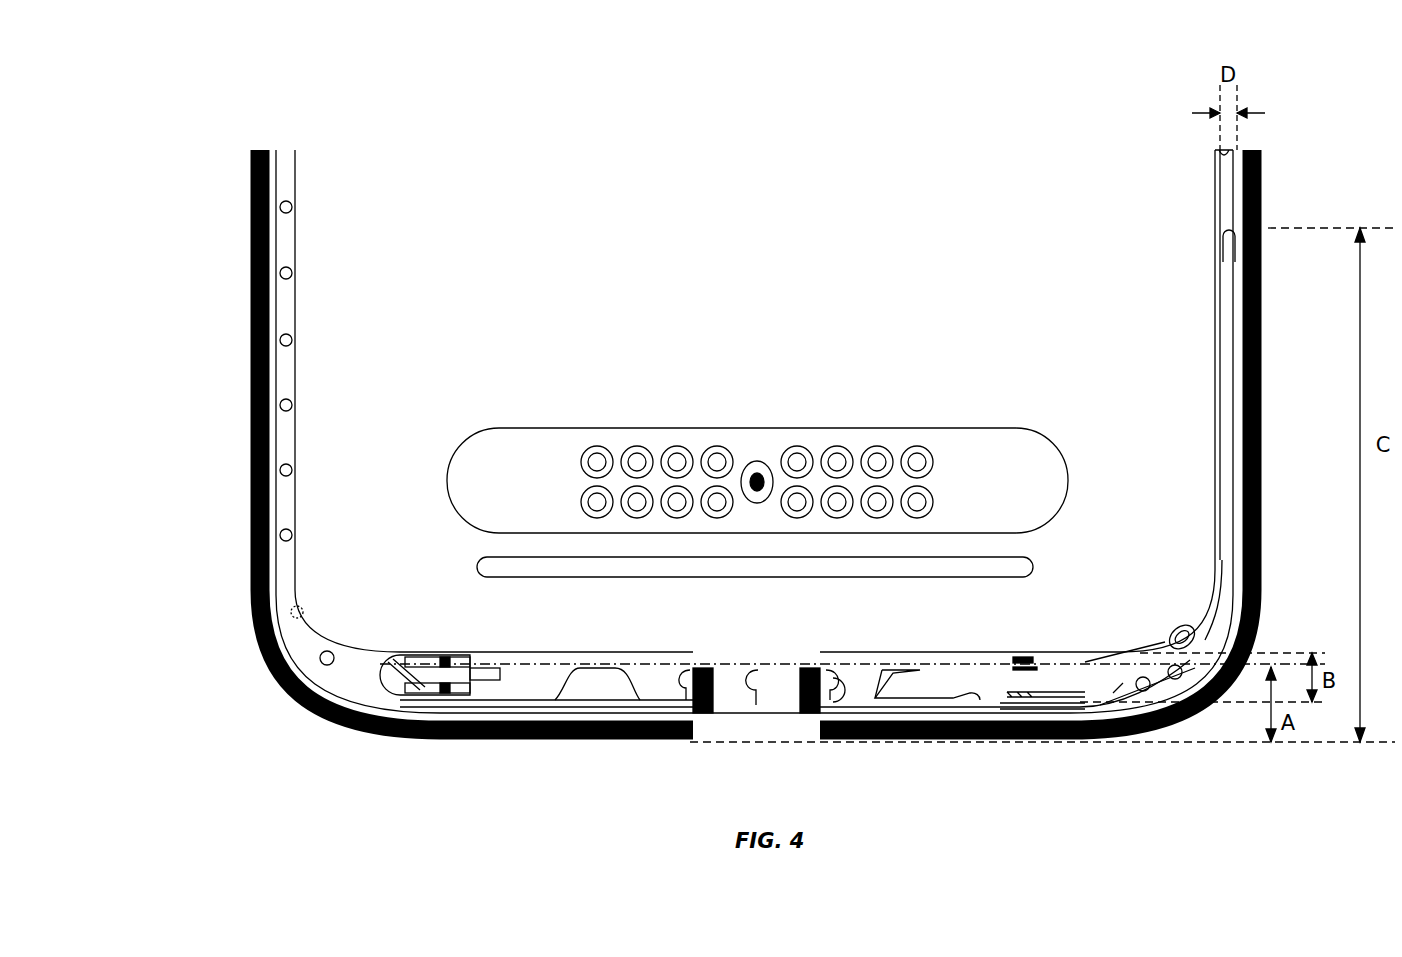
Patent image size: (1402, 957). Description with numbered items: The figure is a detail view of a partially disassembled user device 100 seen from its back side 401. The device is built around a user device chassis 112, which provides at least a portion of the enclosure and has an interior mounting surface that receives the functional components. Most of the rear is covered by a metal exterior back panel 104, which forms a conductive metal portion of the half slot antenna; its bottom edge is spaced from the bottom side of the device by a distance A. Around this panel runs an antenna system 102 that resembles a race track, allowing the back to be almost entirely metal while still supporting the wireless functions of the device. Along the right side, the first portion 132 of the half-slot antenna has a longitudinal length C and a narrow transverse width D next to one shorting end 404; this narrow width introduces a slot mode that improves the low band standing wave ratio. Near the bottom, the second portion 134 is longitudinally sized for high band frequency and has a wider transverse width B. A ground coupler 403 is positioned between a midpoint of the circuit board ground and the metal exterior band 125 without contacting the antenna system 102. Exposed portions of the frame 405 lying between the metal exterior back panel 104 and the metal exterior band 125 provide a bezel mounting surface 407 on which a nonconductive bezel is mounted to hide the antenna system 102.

The user device 100 is at (250, 203).
The back side 401 is at (250, 460).
The metal exterior back panel 104 is at (370, 585).
The bezel mounting surface 407 is at (357, 672).
The metal exterior band 125 is at (385, 737).
The antenna system 102 is at (527, 688).
The second portion 134 is at (835, 695).
The ground coupler 403 is at (980, 695).
The user device chassis 112 is at (1110, 692).
The frame 405 is at (1217, 633).
The first portion 132 is at (1225, 458).
The shorting end 404 is at (1235, 250).